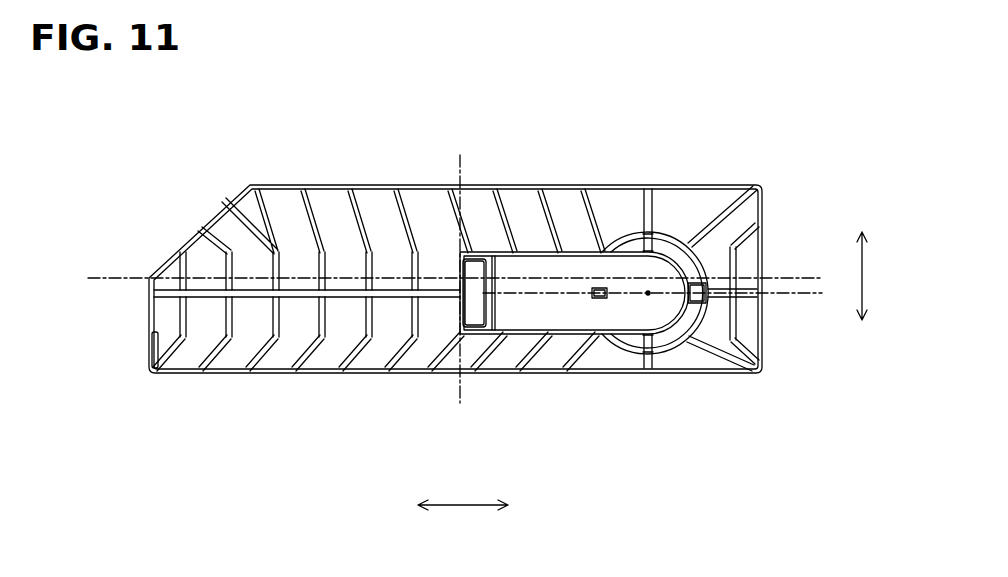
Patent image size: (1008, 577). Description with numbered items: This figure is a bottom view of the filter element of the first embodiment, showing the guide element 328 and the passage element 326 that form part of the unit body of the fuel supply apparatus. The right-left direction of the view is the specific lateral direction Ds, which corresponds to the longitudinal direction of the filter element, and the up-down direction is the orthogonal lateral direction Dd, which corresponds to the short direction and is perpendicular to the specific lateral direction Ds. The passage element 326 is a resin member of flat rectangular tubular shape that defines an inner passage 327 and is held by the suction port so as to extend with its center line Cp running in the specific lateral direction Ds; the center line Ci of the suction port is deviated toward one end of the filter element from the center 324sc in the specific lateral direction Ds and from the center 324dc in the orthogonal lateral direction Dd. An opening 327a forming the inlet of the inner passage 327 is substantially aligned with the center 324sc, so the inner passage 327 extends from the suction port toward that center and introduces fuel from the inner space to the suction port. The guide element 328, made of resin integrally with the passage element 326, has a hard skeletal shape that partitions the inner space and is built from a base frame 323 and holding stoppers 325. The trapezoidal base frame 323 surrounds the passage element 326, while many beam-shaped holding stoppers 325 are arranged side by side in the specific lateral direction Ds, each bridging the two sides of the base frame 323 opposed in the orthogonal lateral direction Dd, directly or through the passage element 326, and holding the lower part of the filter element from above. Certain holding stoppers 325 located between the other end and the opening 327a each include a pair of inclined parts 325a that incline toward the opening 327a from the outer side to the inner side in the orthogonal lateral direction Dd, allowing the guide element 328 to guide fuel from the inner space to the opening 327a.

The base frame 323 is at (600, 187).
The holding stopper 325 is at (205, 393).
The inclined part 325a is at (392, 393).
The passage element 326 is at (625, 315).
The inner passage 327 is at (478, 306).
The opening 327a is at (474, 293).
The guide element 328 is at (707, 123).
The center in the orthogonal lateral direction 324dc is at (146, 268).
The center in the specific lateral direction 324sc is at (460, 397).
The center line of the suction port Ci is at (648, 293).
The center line of the passage element Cp is at (788, 300).
The orthogonal lateral direction Dd is at (878, 276).
The specific lateral direction Ds is at (463, 523).